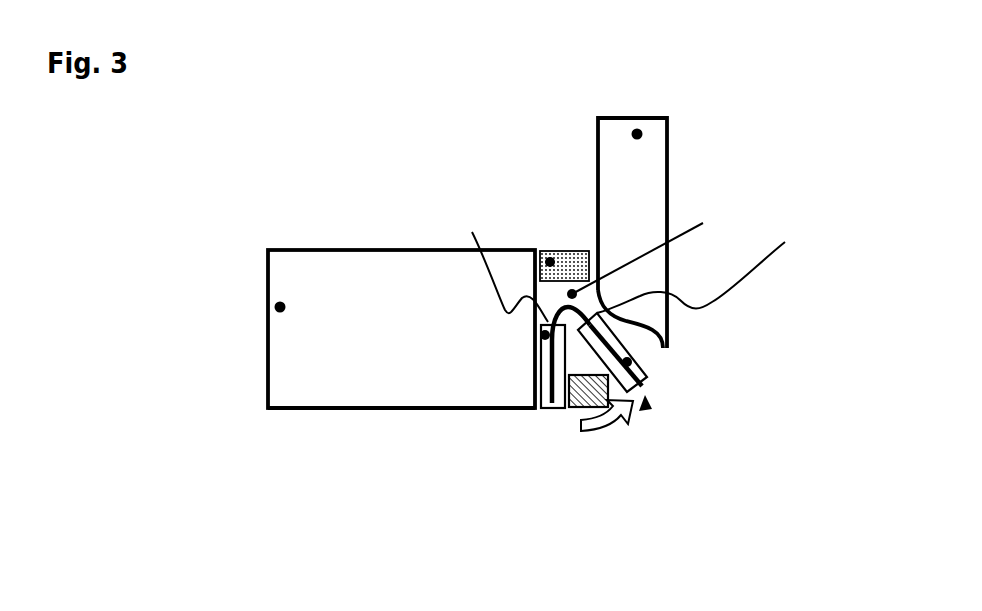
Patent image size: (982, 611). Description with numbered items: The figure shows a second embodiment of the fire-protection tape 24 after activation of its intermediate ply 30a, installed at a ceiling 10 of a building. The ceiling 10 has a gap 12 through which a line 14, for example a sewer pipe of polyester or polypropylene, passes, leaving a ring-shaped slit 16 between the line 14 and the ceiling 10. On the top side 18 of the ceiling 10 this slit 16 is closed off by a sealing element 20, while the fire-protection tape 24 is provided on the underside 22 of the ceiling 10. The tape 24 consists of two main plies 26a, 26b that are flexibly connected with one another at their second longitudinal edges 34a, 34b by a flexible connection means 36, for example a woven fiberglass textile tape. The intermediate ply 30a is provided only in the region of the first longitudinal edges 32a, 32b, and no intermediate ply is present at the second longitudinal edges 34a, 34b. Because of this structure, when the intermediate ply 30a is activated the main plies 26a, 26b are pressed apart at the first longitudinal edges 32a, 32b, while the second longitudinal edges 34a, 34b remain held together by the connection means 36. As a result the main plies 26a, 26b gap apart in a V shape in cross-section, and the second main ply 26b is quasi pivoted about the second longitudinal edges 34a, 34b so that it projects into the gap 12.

The ceiling 10 is at (280, 307).
The gap 12 is at (561, 148).
The line 14 is at (637, 134).
The ring-shaped slit 16 is at (703, 223).
The top side 18 is at (344, 241).
The sealing element 20 is at (550, 262).
The underside 22 is at (335, 416).
The fire-protection tape 24 is at (555, 450).
The first main ply 26a is at (545, 335).
The second main ply 26b is at (627, 362).
The intermediate ply 30a is at (573, 407).
The first longitudinal edge 32a is at (550, 410).
The first longitudinal edge 32b is at (647, 377).
The second longitudinal edge 34a is at (502, 263).
The second longitudinal edge 34b is at (715, 268).
The flexible connection means 36 is at (647, 406).